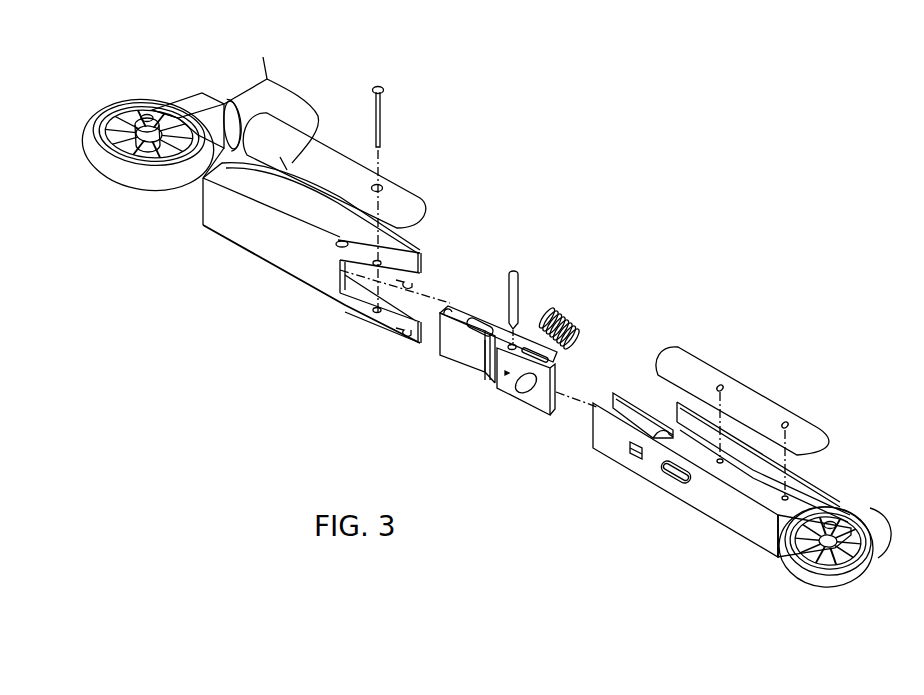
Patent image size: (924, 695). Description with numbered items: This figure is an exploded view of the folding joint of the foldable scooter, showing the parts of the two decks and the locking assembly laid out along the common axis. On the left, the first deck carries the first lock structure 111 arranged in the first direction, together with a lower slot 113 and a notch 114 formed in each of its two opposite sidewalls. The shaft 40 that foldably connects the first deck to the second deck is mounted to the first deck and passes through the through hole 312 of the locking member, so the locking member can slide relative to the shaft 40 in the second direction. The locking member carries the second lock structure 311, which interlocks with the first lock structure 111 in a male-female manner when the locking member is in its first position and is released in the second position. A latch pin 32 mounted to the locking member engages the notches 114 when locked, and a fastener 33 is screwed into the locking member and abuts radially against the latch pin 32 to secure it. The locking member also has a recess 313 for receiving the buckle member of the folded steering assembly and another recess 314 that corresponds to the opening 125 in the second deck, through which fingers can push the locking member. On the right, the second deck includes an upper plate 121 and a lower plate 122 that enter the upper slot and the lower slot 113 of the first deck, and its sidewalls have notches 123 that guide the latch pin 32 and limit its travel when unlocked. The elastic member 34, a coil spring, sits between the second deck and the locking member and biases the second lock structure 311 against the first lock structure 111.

The shaft 40 is at (383, 102).
The first lock structure 111 is at (341, 312).
The lower slot 113 is at (383, 319).
The notch 114 is at (410, 337).
The second lock structure 311 is at (446, 302).
The through hole 312 is at (482, 324).
The recess 313 is at (484, 350).
The recess 314 is at (529, 394).
The fastener 33 is at (475, 390).
The latch pin 32 is at (518, 297).
The elastic member 34 is at (579, 332).
The upper plate 121 is at (630, 396).
The notch 123 is at (656, 430).
The lower plate 122 is at (610, 448).
The opening 125 is at (678, 482).